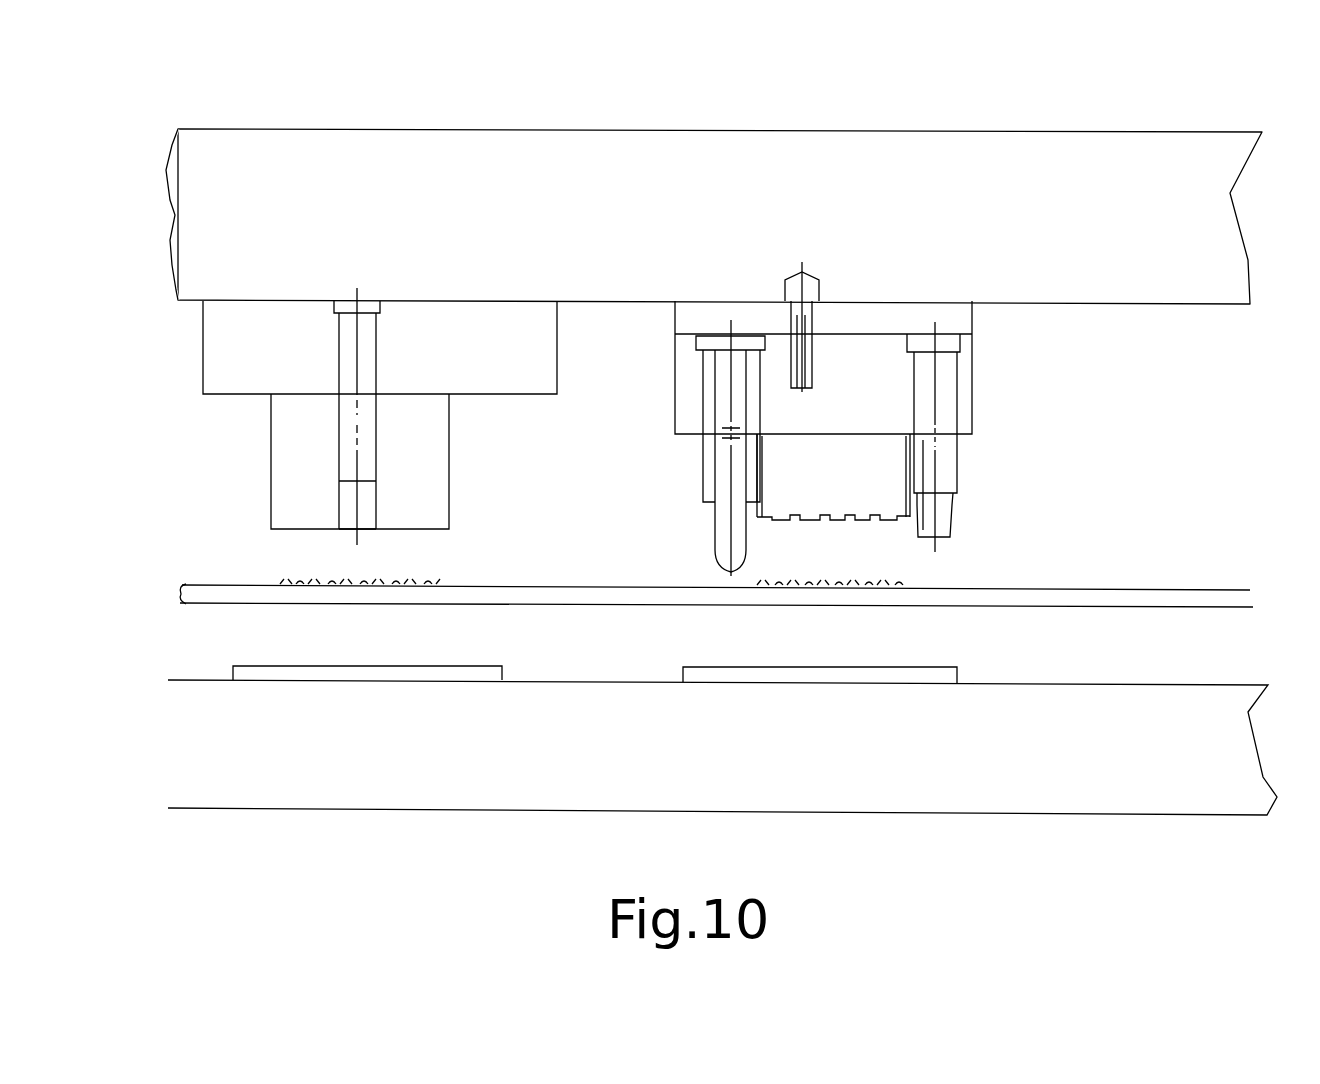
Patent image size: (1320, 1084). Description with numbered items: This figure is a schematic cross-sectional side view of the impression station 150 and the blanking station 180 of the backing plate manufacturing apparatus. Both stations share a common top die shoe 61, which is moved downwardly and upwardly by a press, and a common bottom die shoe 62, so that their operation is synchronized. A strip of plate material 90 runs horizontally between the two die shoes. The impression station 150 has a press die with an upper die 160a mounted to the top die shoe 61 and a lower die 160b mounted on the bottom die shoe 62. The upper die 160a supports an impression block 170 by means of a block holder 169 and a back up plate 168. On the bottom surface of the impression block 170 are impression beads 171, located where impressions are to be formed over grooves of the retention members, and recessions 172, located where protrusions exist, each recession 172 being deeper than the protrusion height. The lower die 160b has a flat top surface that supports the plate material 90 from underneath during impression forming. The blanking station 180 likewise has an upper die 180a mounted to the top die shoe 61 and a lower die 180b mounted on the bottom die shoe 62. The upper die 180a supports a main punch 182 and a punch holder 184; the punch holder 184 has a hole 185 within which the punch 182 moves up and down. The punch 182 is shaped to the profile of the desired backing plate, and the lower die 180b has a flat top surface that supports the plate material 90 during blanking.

The top die shoe 61 is at (875, 183).
The bottom die shoe 62 is at (932, 780).
The plate material 90 is at (1088, 597).
The impression station 150 is at (879, 321).
The blanking station 180 is at (332, 320).
The upper die 160a is at (995, 385).
The bottom die 160b is at (763, 673).
The back up plate 168 is at (857, 317).
The block holder 169 is at (872, 377).
The impression block 170 is at (888, 480).
The impression beads 171 is at (890, 522).
The recessions 172 is at (842, 520).
The upper die 180a is at (232, 350).
The bottom die 180b is at (308, 672).
The main punch 182 is at (302, 466).
The punch holder 184 is at (350, 522).
The hole 185 is at (365, 460).